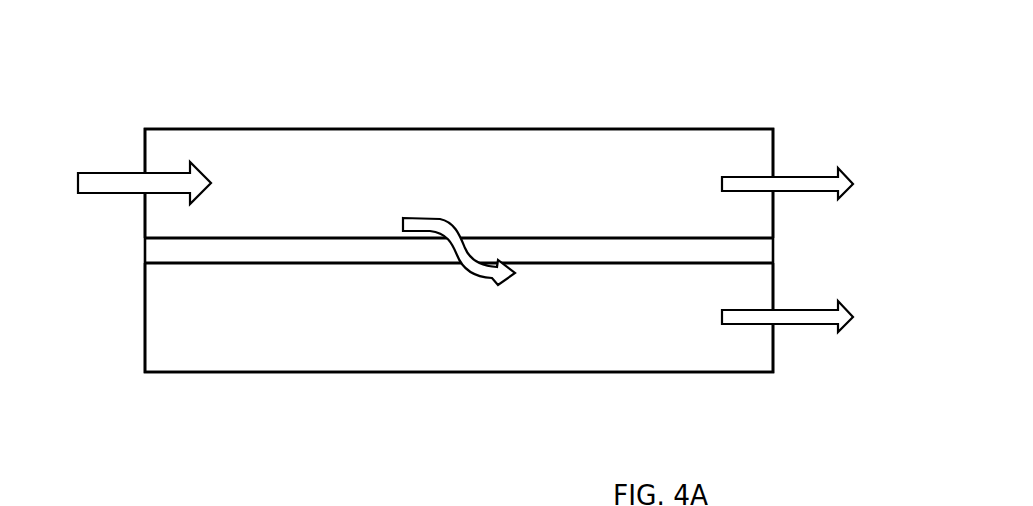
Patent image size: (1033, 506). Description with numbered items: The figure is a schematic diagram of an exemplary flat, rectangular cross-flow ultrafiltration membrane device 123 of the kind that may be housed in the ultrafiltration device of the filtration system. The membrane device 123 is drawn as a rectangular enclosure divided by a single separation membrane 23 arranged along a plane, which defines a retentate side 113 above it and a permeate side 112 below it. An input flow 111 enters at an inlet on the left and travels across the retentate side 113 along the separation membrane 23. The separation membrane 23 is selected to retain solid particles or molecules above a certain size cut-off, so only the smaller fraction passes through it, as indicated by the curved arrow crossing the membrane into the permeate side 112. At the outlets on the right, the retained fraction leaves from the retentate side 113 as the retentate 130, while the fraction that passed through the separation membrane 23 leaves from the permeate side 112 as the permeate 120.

The ultrafiltration membrane device 123 is at (430, 215).
The input flow 111 is at (119, 183).
The retentate side 113 is at (417, 146).
The permeate side 112 is at (411, 366).
The separation membrane 23 is at (571, 236).
The retentate 130 is at (810, 177).
The permeate 120 is at (822, 322).